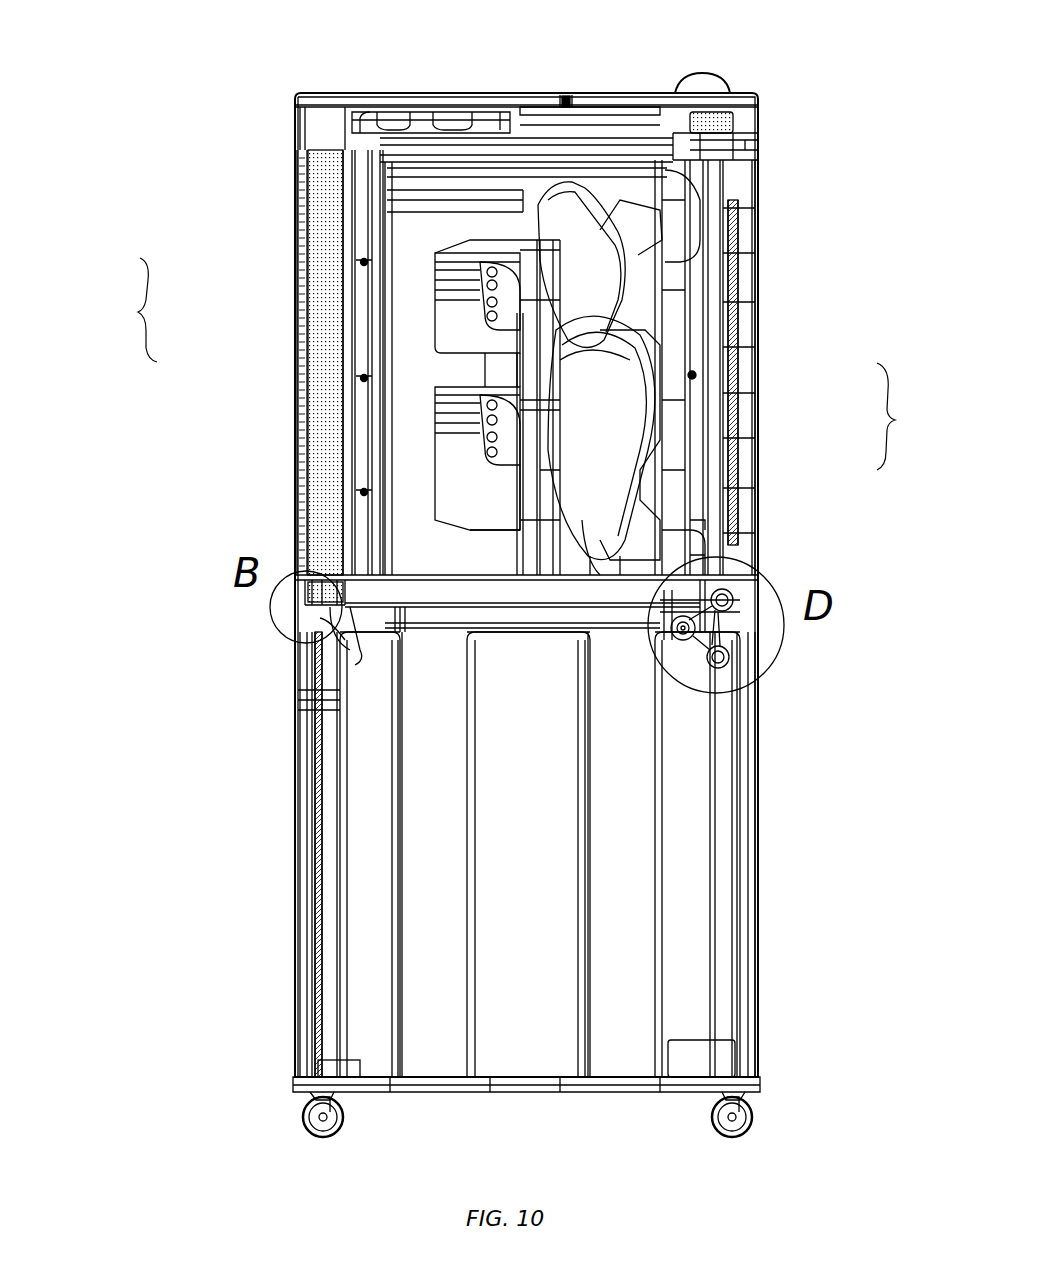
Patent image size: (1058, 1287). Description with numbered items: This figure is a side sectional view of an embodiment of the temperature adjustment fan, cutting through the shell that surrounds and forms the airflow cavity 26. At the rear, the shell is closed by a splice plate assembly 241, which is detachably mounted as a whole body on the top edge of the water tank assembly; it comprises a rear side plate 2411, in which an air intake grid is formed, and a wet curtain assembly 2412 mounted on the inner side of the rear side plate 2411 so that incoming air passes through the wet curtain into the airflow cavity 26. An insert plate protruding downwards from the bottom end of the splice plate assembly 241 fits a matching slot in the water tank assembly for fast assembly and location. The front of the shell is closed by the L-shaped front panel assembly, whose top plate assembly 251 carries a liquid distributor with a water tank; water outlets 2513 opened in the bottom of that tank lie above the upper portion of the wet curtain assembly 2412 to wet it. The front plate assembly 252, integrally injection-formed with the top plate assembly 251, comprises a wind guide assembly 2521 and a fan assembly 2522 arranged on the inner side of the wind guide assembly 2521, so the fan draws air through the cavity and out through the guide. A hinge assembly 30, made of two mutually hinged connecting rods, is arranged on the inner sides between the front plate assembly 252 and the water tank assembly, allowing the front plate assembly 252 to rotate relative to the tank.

The splice plate assembly 241 is at (213, 362).
The wet curtain assembly 2412 is at (317, 308).
The rear side plate 2411 is at (297, 355).
The airflow cavity 26 is at (395, 435).
The water outlets 2513 is at (440, 150).
The top plate assembly 251 is at (573, 97).
The front plate assembly 252 is at (808, 367).
The wind guide assembly 2521 is at (750, 353).
The fan assembly 2522 is at (625, 410).
The hinge assembly 30 is at (730, 655).